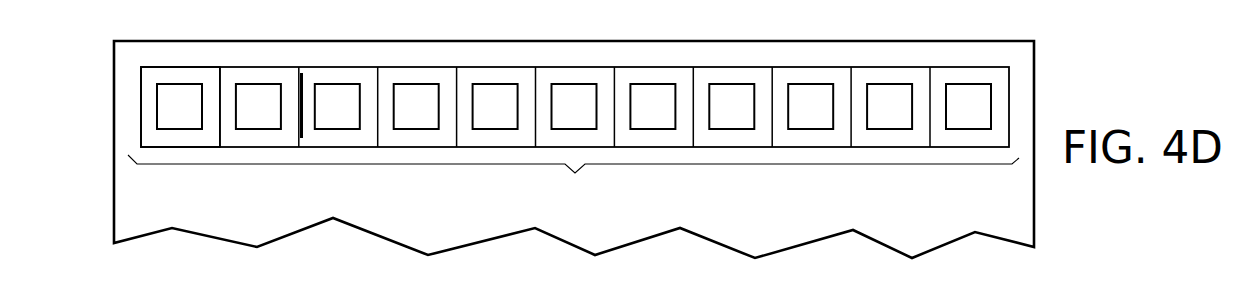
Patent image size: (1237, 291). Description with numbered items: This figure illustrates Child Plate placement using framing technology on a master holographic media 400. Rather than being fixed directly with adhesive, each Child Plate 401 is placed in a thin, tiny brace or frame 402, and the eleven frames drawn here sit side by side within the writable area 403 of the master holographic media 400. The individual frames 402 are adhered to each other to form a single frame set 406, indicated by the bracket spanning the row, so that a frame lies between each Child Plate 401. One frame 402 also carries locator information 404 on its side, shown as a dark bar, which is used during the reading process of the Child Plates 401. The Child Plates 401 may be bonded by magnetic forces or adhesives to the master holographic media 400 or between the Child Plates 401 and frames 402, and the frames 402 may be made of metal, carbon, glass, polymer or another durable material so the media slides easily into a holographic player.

The master holographic media 400 is at (1048, 65).
The Child Plate 401 is at (262, 83).
The frame 402 is at (181, 66).
The writable area 403 is at (113, 143).
The locator information 404 is at (303, 107).
The frame set 406 is at (573, 179).